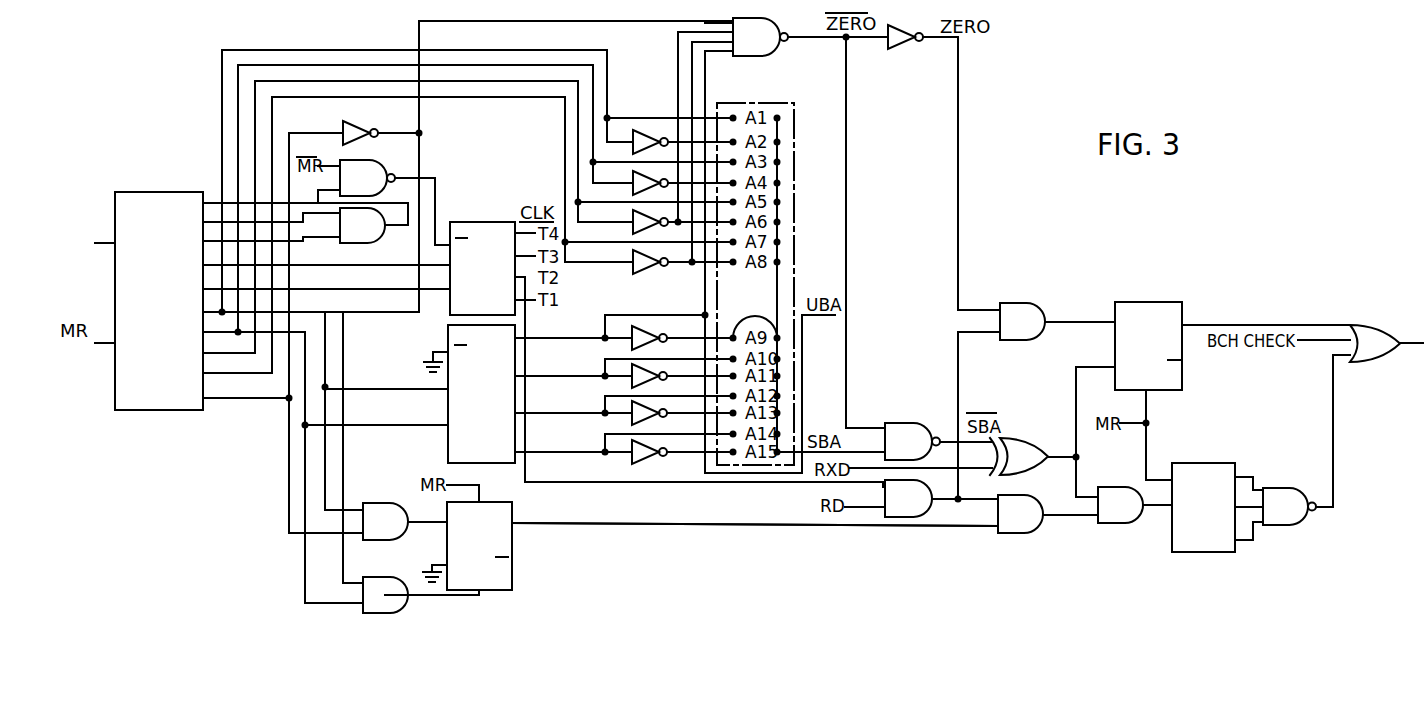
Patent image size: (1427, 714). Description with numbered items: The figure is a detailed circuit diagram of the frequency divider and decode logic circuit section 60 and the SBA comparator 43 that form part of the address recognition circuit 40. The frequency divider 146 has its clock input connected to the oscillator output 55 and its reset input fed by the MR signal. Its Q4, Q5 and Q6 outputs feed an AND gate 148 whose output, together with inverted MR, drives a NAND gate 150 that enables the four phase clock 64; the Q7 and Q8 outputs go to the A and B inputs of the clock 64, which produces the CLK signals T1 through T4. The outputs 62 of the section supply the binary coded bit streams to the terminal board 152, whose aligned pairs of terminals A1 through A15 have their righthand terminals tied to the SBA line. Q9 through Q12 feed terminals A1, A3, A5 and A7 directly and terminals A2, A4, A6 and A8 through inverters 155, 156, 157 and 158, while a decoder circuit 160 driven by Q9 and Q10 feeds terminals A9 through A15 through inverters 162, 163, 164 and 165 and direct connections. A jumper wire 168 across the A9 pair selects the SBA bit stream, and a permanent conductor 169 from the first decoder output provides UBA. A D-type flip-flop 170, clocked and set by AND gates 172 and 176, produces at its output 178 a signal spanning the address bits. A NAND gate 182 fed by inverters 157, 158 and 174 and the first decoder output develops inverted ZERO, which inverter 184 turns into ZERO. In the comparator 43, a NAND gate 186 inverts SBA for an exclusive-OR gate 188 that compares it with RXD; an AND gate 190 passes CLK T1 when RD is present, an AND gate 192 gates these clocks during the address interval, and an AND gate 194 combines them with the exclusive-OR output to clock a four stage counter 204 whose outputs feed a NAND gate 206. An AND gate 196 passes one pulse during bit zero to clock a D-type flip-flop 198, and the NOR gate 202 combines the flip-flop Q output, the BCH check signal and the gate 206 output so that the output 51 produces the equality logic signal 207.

The output of the oscillator 55 is at (100, 243).
The frequency divider 146 is at (166, 192).
The AND gate 148 is at (362, 243).
The NAND gate 150 is at (364, 161).
The inverter 174 is at (355, 124).
The four phase clock 64 is at (487, 222).
The decoder circuit 160 is at (448, 334).
The inverter 155 is at (633, 147).
The inverter 156 is at (633, 178).
The inverter 157 is at (633, 226).
The inverter 158 is at (633, 268).
The outputs 62 is at (681, 306).
The terminal board 152 is at (785, 103).
The jumper wire 168 is at (752, 317).
The permanent conductor 169 is at (803, 373).
The NAND gate 182 is at (780, 49).
The inverter 184 is at (903, 49).
The inverter 162 is at (655, 324).
The inverter 163 is at (655, 381).
The inverter 164 is at (655, 419).
The inverter 165 is at (655, 460).
The D-type flip-flop 170 is at (486, 502).
The AND gate 172 is at (391, 503).
The AND gate 176 is at (372, 577).
The circuit section 60 is at (583, 509).
The output of the flip-flop 178 is at (661, 525).
The address recognition circuit 40 is at (790, 560).
The NAND gate 186 is at (888, 423).
The exclusive-OR gate 188 is at (1014, 437).
The SBA comparator 43 is at (1054, 416).
The AND gate 190 is at (913, 481).
The AND gate 192 is at (1018, 496).
The AND gate 194 is at (1118, 487).
The AND gate 196 is at (1022, 292).
The D-type flip-flop 198 is at (1144, 290).
The NOR gate 202 is at (1386, 323).
The output of the comparator 51 is at (1413, 339).
The equality logic signal 207 is at (1413, 350).
The four stage counter 204 is at (1207, 463).
The NAND gate 206 is at (1278, 488).